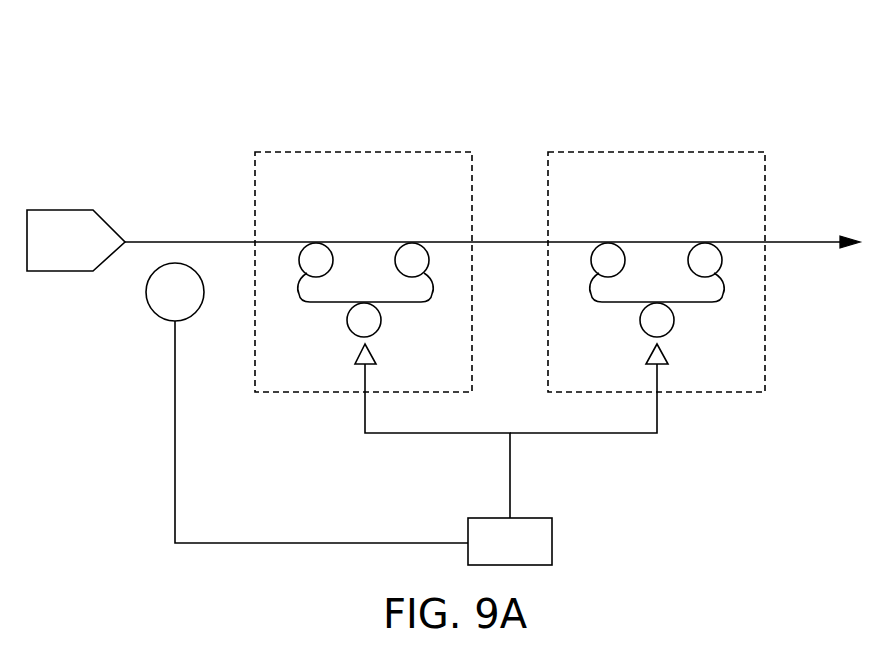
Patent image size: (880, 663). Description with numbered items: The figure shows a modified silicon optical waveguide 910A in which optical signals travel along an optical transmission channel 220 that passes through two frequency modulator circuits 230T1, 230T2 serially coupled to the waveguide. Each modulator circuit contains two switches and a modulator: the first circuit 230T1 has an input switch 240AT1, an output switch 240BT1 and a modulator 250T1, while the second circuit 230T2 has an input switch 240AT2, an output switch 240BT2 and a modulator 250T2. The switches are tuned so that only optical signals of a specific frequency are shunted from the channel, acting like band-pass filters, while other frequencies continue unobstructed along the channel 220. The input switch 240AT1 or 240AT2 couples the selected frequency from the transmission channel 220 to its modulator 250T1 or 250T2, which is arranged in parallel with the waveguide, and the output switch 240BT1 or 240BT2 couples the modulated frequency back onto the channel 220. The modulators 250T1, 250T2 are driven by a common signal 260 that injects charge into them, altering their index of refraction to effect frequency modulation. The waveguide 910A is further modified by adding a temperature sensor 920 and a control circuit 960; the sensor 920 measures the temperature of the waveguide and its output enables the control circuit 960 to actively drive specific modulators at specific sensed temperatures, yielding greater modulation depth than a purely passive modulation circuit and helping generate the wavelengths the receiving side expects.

The silicon optical waveguide 910A is at (757, 36).
The optical transmission channel 220 is at (207, 240).
The first frequency modulator circuit 230T1 is at (367, 152).
The second frequency modulator circuit 230T2 is at (660, 152).
The input switch 240AT1 is at (316, 253).
The output switch 240BT1 is at (412, 253).
The input switch 240AT2 is at (608, 253).
The output switch 240BT2 is at (705, 253).
The modulator 250T1 is at (357, 322).
The modulator 250T2 is at (650, 322).
The common signal 260 is at (423, 433).
The temperature sensor 920 is at (157, 304).
The control circuit 960 is at (492, 554).